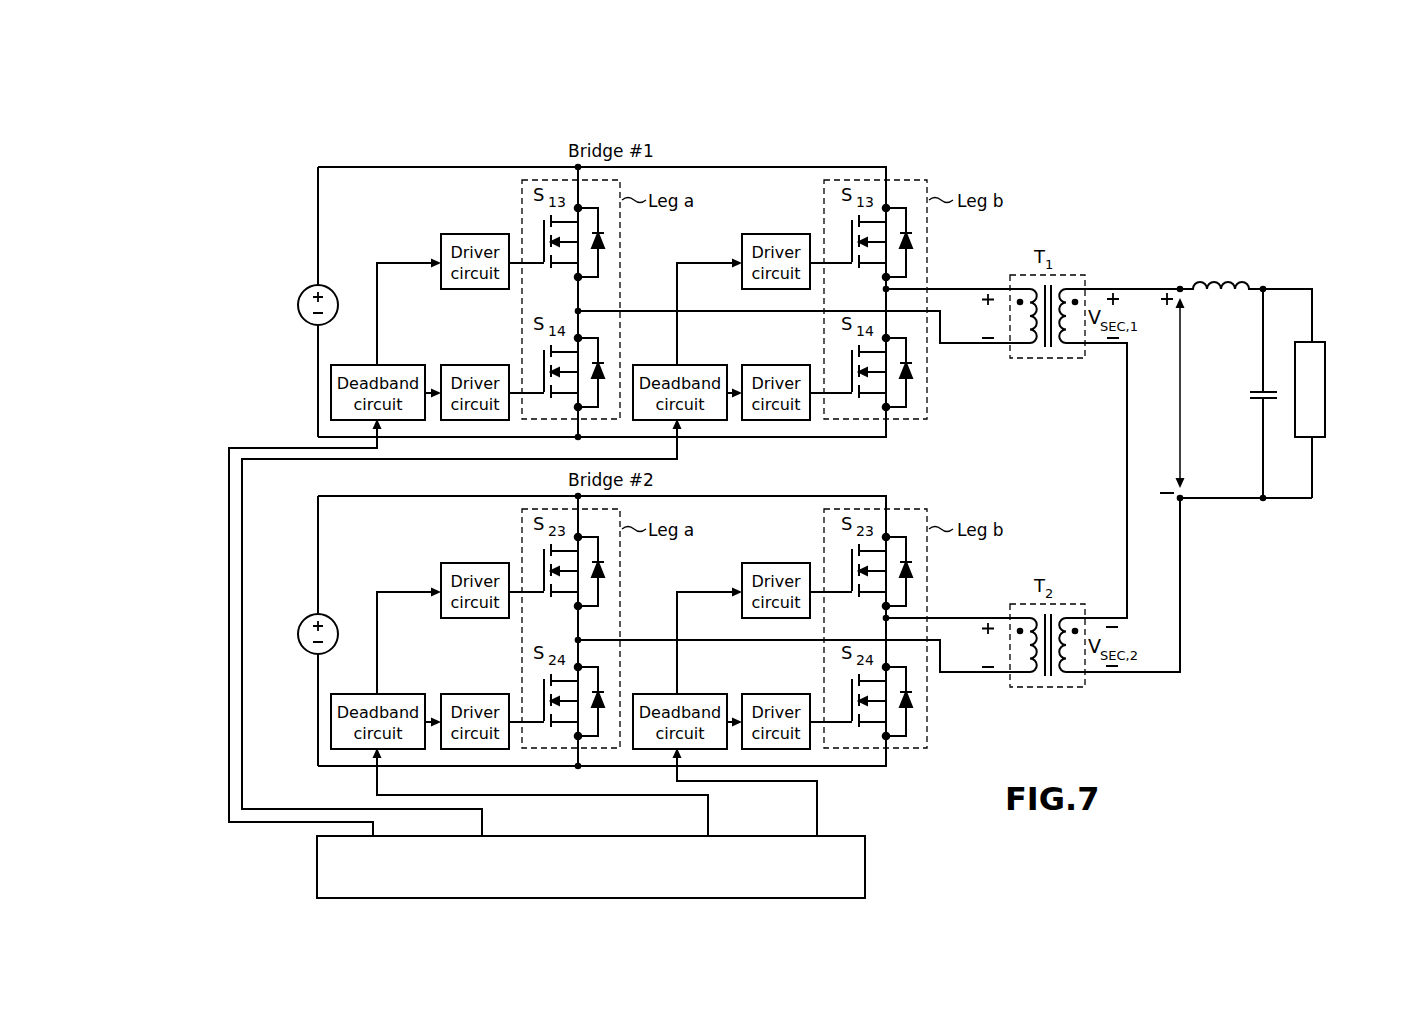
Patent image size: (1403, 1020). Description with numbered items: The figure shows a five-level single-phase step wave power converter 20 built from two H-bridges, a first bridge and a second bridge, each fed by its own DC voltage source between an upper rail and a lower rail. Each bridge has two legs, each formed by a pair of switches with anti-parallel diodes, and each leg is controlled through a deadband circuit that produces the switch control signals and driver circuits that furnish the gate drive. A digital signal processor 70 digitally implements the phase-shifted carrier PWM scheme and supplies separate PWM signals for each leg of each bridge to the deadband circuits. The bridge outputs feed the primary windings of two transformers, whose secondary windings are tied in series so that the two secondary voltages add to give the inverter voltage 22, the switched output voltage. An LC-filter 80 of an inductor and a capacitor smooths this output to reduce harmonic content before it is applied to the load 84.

The step wave power converter 20 is at (1140, 205).
The inverter voltage 22 is at (1183, 451).
The digital signal processor 70 is at (868, 862).
The LC-filter 80 is at (1255, 390).
The load 84 is at (1290, 355).